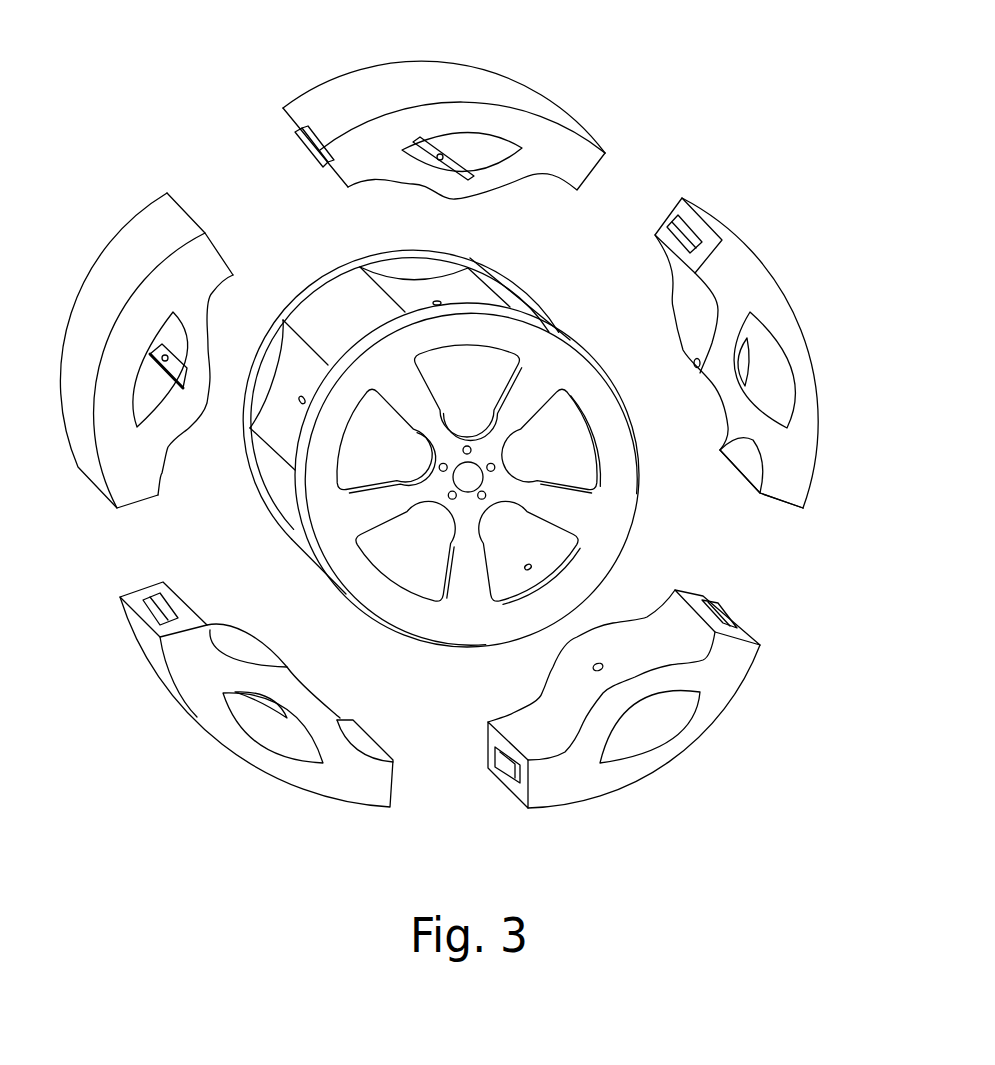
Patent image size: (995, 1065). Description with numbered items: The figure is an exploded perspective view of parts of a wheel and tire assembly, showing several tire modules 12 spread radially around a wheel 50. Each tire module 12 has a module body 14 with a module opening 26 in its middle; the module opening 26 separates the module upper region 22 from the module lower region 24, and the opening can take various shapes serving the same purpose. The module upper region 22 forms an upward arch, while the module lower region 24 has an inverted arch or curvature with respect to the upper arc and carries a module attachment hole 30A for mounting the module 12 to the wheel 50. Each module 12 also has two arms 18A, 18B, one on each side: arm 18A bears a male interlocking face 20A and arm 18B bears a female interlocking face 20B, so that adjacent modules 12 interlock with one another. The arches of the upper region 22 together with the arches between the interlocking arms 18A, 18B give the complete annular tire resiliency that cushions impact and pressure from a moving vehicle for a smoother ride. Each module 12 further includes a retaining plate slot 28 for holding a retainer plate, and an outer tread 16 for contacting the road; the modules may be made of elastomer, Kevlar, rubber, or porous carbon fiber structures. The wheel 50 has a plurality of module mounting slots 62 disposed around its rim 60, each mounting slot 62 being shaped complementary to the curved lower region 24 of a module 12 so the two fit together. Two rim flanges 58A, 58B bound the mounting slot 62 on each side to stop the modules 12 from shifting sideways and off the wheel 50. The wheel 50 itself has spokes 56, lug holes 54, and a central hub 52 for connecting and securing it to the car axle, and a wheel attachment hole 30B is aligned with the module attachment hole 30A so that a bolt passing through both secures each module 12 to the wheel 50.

The tire module 12 is at (413, 115).
The module body 14 is at (784, 360).
The tread 16 is at (320, 112).
The arm 18A is at (723, 268).
The arm 18B is at (790, 486).
The male interlocking face 20A is at (743, 632).
The female interlocking face 20B is at (523, 790).
The module upper region 22 is at (468, 118).
The module lower region 24 is at (445, 190).
The module opening 26 is at (252, 703).
The retaining plate slot 28 is at (122, 350).
The module attachment hole 30A is at (185, 366).
The wheel attachment hole 30B is at (297, 406).
The wheel 50 is at (499, 459).
The hub 52 is at (480, 457).
The lug holes 54 is at (449, 493).
The spokes 56 is at (512, 402).
The rim flange 58A is at (440, 250).
The rim flange 58B is at (488, 307).
The rim 60 is at (375, 404).
The module mounting slot 62 is at (413, 296).